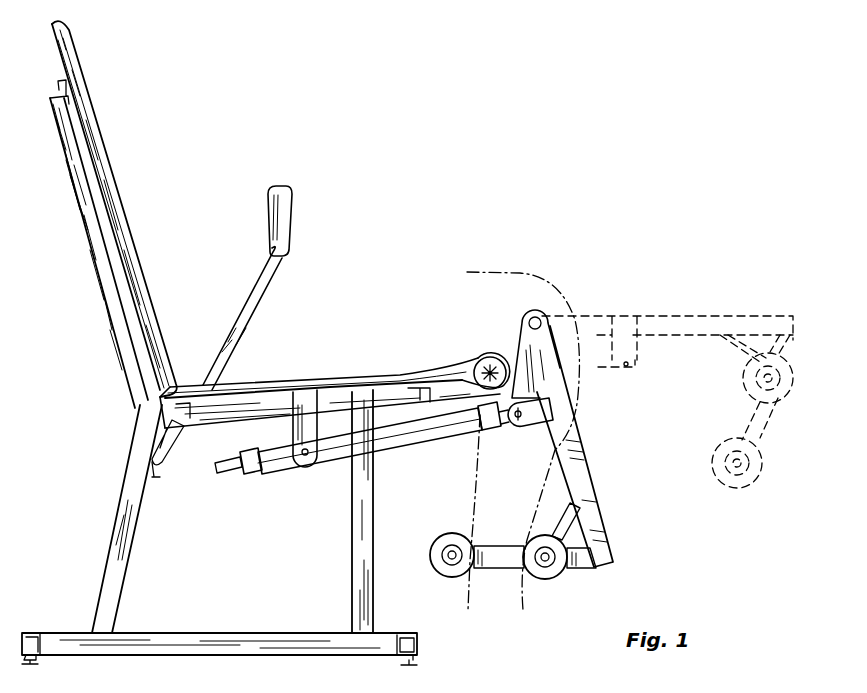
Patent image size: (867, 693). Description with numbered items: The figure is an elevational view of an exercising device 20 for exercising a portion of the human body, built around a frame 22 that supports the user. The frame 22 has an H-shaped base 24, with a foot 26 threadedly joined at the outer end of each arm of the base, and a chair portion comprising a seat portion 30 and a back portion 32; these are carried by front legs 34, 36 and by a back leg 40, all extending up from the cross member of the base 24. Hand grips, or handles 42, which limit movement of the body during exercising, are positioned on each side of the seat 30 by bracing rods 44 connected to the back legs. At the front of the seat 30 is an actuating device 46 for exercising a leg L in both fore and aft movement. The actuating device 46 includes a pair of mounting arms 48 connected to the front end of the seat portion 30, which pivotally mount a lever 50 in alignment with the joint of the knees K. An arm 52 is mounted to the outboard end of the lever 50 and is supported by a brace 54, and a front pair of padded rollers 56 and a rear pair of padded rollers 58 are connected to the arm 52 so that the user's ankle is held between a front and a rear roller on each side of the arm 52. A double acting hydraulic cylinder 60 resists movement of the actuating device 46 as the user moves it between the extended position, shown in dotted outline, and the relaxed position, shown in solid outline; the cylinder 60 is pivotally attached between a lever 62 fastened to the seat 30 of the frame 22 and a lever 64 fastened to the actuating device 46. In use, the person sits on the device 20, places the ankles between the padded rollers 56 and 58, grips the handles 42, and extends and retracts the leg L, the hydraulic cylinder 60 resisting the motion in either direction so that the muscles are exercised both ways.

The device 20 is at (92, 72).
The frame 22 is at (60, 142).
The back portion 32 is at (102, 210).
The back leg 40 is at (120, 498).
The H-shaped base 24 is at (27, 634).
The foot 26 is at (42, 664).
The front leg 34 is at (352, 494).
The front leg 36 is at (352, 552).
The seat portion 30 is at (208, 418).
The lever 62 is at (293, 437).
The double acting hydraulic cylinder 60 is at (256, 482).
The lever 64 is at (562, 432).
The mounting arm 48 is at (518, 330).
The actuating device 46 is at (588, 462).
The lever 50 is at (600, 504).
The brace 54 is at (566, 520).
The arm 52 is at (580, 570).
The front padded rollers 56 is at (547, 582).
The rear padded rollers 58 is at (446, 578).
The bracing rods 44 is at (250, 288).
The handles 42 is at (292, 216).
The knees K is at (554, 290).
The leg L is at (478, 478).